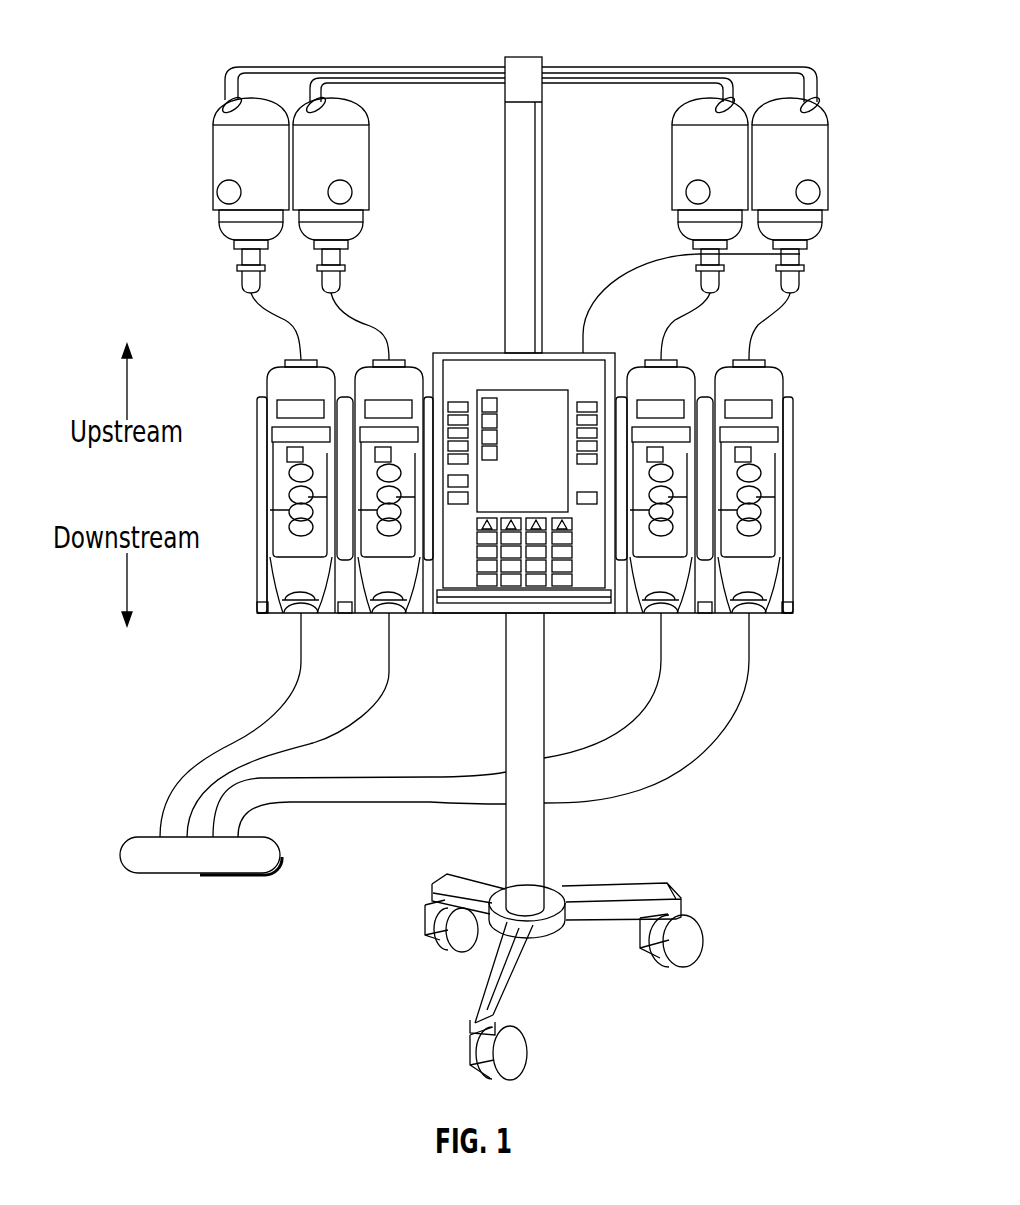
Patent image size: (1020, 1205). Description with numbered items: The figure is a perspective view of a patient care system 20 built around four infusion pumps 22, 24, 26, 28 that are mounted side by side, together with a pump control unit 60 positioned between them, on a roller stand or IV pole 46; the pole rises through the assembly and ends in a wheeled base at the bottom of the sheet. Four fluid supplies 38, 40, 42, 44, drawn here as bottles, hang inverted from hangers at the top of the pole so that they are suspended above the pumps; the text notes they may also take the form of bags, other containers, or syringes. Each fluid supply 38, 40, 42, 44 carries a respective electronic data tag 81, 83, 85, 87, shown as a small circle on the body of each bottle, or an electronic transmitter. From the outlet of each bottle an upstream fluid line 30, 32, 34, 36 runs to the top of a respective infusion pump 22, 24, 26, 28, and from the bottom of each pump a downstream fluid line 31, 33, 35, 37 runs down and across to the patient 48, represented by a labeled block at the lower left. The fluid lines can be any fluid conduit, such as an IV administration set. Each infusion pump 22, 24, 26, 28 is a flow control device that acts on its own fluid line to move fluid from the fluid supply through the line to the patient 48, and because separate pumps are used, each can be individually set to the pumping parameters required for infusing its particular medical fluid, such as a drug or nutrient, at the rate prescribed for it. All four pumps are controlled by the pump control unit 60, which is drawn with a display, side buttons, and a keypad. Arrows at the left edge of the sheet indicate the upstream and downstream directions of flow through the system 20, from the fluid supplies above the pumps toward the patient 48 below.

The patient care system 20 is at (202, 45).
The infusion pump 22 is at (777, 368).
The infusion pump 24 is at (632, 360).
The infusion pump 26 is at (372, 367).
The infusion pump 28 is at (282, 367).
The upstream fluid line 30 is at (790, 302).
The downstream fluid line 31 is at (749, 658).
The upstream fluid line 32 is at (705, 306).
The downstream fluid line 33 is at (658, 665).
The upstream fluid line 34 is at (341, 318).
The downstream fluid line 35 is at (373, 700).
The upstream fluid line 36 is at (254, 306).
The downstream fluid line 37 is at (295, 680).
The fluid supply 38 is at (828, 152).
The fluid supply 40 is at (673, 152).
The fluid supply 42 is at (369, 150).
The fluid supply 44 is at (213, 163).
The IV pole 46 is at (547, 838).
The patient 48 is at (120, 852).
The pump control unit 60 is at (500, 353).
The electronic data tag 81 is at (820, 192).
The electronic data tag 83 is at (686, 192).
The electronic data tag 85 is at (352, 192).
The electronic data tag 87 is at (217, 192).